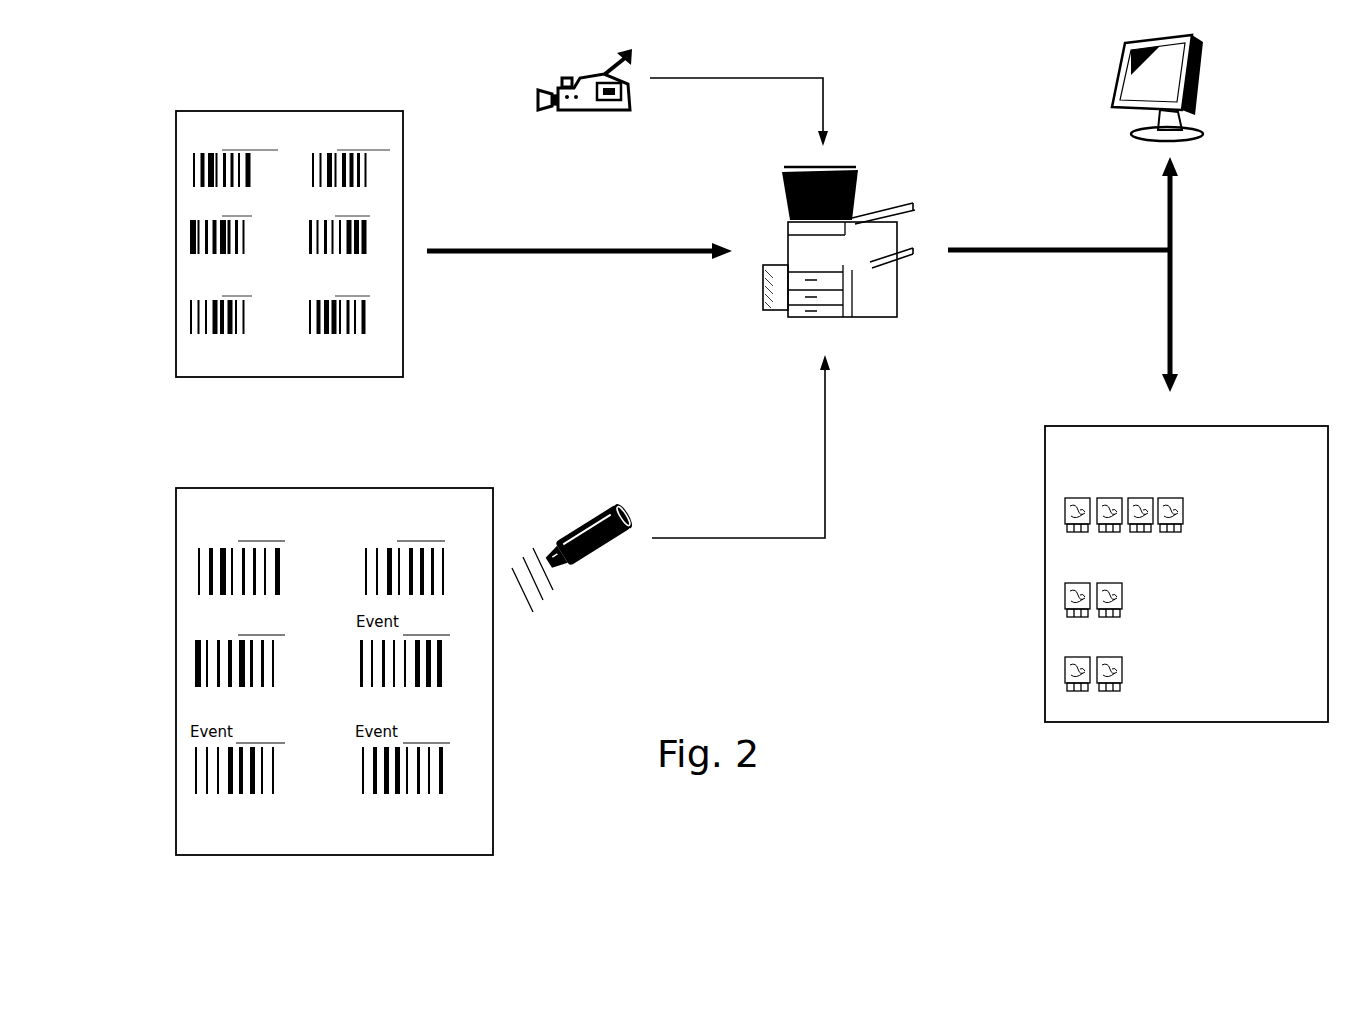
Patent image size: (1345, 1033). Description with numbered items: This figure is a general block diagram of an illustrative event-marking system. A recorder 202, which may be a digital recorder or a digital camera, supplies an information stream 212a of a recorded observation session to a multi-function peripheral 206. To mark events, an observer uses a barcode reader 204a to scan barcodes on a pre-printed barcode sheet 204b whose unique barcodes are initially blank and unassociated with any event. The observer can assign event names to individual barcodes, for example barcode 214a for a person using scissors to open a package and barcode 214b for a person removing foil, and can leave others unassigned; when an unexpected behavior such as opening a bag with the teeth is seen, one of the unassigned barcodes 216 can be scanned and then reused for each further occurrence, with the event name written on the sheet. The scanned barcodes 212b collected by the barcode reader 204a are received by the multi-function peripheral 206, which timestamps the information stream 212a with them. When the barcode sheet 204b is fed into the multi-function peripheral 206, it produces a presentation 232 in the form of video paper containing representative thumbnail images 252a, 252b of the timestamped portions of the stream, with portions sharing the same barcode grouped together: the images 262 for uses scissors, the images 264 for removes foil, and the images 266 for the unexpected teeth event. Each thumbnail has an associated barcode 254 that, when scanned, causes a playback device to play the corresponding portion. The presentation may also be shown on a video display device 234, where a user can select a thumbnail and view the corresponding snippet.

The recorder 202 is at (548, 65).
The information stream 212a is at (742, 78).
The multi-function peripheral 206 is at (877, 173).
The video display device 234 is at (1218, 132).
The presentation 232 is at (1268, 425).
The barcode sheet 204b is at (348, 488).
The barcode 214a is at (195, 573).
The barcode 214b is at (440, 517).
The unassigned barcode 216 is at (185, 653).
The barcode reader 204a is at (643, 508).
The scanned barcodes 212b is at (733, 538).
The thumbnail image 252a is at (1065, 510).
The thumbnail image 252b is at (1065, 592).
The barcode 254 is at (1065, 690).
The images 262 is at (1212, 509).
The images 264 is at (1154, 597).
The images 266 is at (1154, 672).